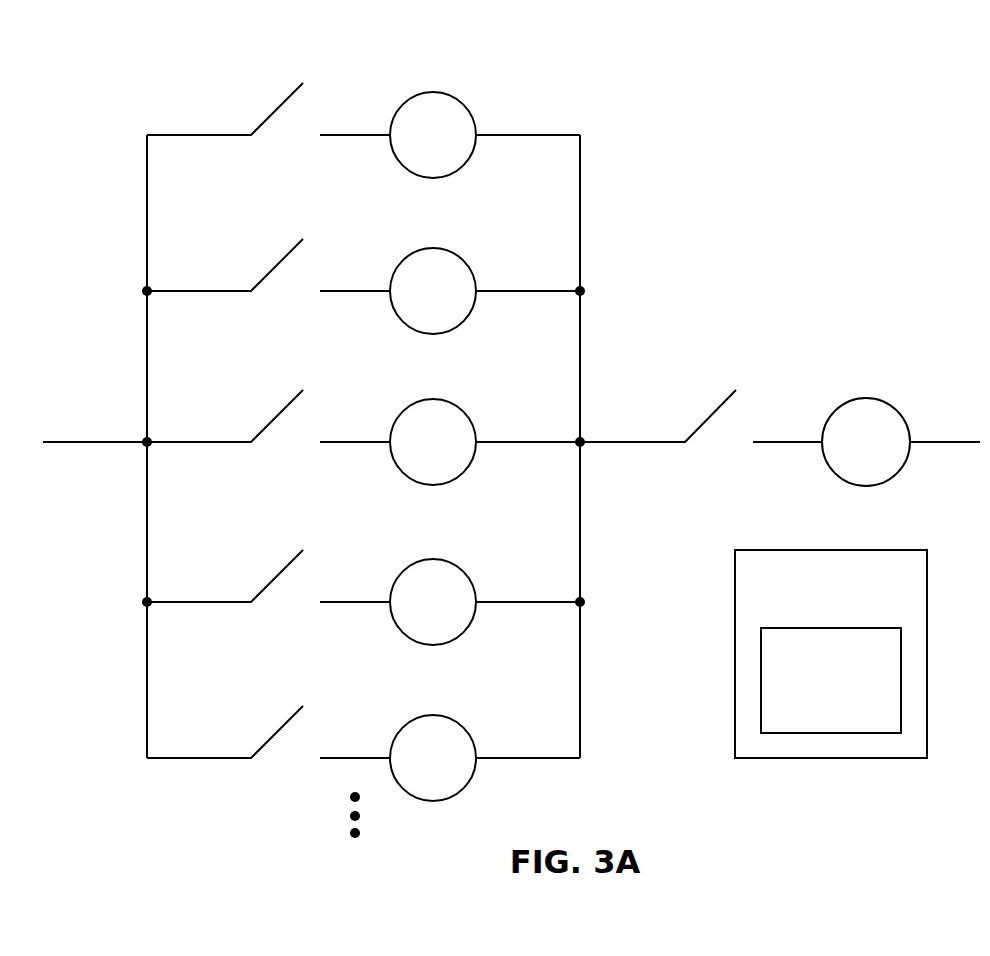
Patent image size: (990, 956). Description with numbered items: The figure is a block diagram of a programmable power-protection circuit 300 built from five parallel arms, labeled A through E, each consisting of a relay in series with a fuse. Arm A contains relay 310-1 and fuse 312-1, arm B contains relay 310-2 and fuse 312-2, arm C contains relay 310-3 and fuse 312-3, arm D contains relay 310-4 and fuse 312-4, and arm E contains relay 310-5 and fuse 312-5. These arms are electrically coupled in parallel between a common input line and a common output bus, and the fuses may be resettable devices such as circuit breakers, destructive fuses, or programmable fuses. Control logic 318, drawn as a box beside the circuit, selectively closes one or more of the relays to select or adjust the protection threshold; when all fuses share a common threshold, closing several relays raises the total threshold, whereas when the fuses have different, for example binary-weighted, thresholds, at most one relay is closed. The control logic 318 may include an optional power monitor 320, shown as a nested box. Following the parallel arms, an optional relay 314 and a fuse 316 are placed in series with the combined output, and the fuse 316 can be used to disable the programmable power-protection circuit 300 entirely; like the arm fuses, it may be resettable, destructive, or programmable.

The programmable power-protection circuit 300 is at (770, 125).
The relay 310-1 is at (287, 100).
The fuse 312-1 is at (450, 135).
The relay 310-2 is at (287, 256).
The fuse 312-2 is at (450, 291).
The relay 310-3 is at (287, 407).
The fuse 312-3 is at (450, 442).
The relay 310-4 is at (287, 567).
The fuse 312-4 is at (450, 602).
The relay 310-5 is at (287, 723).
The fuse 312-5 is at (450, 758).
The optional relay 314 is at (720, 407).
The fuse 316 is at (866, 442).
The control logic 318 is at (831, 654).
The optional power monitor 320 is at (831, 680).